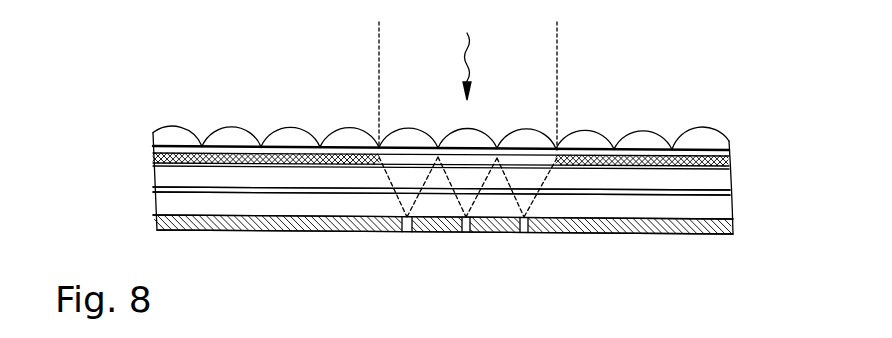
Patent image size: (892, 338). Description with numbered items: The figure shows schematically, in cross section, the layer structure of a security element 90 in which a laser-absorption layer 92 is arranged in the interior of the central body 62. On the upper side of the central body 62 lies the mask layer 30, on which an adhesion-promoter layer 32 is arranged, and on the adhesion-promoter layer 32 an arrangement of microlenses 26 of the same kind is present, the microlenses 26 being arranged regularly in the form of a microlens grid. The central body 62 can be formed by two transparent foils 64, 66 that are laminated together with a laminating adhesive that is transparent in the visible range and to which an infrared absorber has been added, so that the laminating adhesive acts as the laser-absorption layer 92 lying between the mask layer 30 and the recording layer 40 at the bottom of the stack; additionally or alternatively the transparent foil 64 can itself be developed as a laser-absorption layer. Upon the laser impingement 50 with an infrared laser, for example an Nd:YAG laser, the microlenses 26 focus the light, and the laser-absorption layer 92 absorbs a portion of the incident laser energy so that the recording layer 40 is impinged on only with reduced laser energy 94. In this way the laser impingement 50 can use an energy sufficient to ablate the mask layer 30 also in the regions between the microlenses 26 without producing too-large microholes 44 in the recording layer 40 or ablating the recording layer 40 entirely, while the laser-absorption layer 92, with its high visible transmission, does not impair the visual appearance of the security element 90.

The security element 90 is at (103, 104).
The laser impingement 50 is at (473, 43).
The microlenses 26 is at (646, 140).
The adhesion-promoter layer 32 is at (720, 155).
The mask layer 30 is at (720, 162).
The central body 62 is at (95, 160).
The transparent foil 66 is at (168, 175).
The transparent foil 64 is at (170, 205).
The laser-absorption layer 92 is at (720, 193).
The recording layer 40 is at (722, 227).
The microholes 44 is at (464, 235).
The reduced laser energy 94 is at (533, 212).